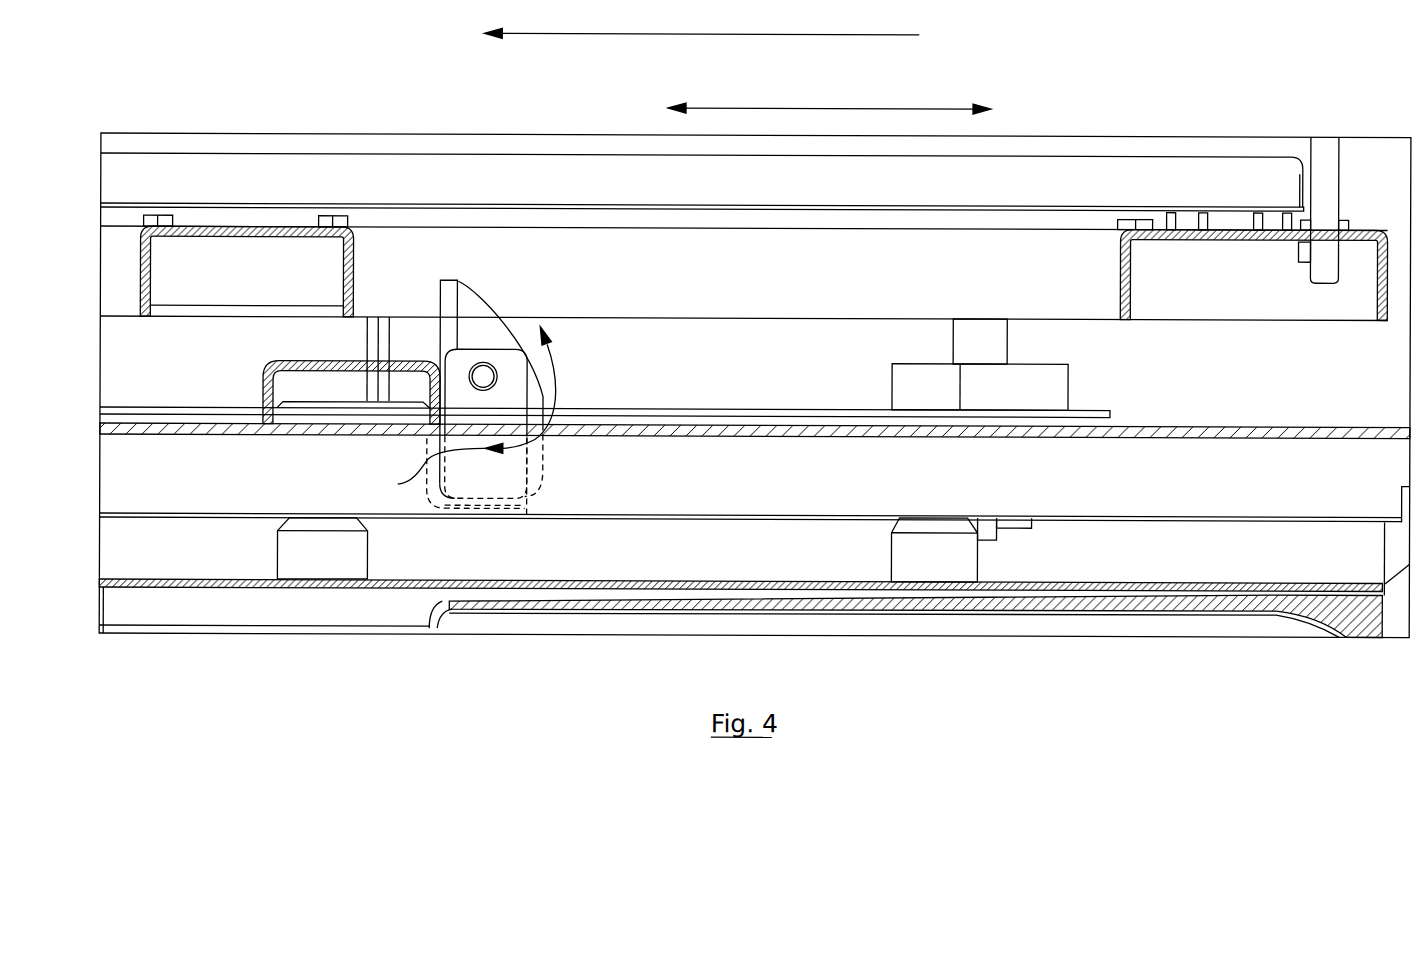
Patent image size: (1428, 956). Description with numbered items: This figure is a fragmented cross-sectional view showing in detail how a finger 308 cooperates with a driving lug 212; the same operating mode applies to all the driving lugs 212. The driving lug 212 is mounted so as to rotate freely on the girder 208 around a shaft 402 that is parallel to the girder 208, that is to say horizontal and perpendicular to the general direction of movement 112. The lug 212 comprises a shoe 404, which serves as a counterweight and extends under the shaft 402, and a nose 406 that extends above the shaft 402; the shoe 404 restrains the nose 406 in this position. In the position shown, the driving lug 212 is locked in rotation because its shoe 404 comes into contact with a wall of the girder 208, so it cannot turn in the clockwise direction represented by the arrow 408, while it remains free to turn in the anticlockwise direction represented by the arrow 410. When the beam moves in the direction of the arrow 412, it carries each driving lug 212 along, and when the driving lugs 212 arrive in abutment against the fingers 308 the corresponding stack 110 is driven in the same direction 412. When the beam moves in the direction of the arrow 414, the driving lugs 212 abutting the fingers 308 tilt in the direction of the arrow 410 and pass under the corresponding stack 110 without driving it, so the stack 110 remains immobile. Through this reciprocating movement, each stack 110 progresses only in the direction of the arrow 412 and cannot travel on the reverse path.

The stack 110 is at (1202, 173).
The general direction of movement 112 is at (701, 53).
The girder 208 is at (265, 388).
The driving lug 212 is at (597, 306).
The finger 308 is at (352, 263).
The shaft 402 is at (480, 372).
The shoe 404 is at (533, 464).
The nose 406 is at (461, 283).
The arrow 408 is at (417, 472).
The arrow 410 is at (544, 389).
The arrow 412 is at (747, 93).
The arrow 414 is at (915, 93).